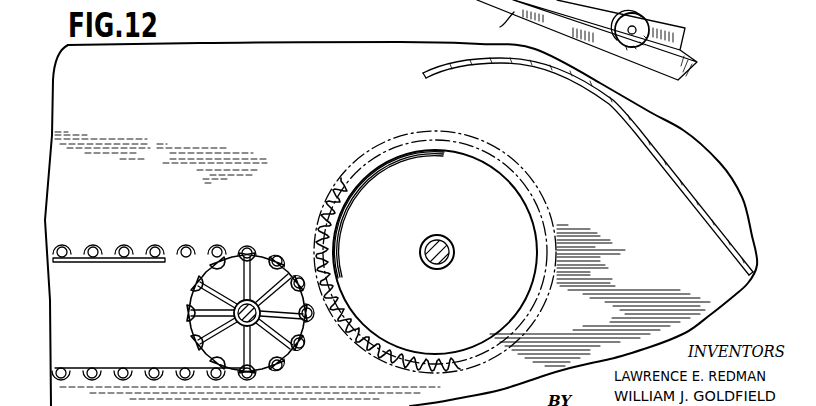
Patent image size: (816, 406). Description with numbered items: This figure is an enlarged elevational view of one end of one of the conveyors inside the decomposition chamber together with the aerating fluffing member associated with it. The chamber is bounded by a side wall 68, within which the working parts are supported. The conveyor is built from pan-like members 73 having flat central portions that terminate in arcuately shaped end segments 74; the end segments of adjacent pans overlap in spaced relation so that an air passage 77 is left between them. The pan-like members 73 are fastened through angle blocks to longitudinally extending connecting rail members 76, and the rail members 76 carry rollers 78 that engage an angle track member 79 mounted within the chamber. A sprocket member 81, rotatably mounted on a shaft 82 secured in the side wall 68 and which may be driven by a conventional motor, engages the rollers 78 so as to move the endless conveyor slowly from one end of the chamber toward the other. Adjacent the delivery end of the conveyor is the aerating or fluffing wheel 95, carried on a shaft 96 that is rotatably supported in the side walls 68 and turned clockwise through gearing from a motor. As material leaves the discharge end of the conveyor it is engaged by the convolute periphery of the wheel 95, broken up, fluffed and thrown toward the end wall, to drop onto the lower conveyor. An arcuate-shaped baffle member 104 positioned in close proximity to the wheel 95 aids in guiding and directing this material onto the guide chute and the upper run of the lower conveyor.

The side wall 68 is at (245, 125).
The pan-like member 73 is at (211, 378).
The arcuately shaped end segment 74 is at (122, 248).
The connecting rail member 76 is at (686, 34).
The air passage 77 is at (154, 247).
The roller 78 is at (466, 0).
The angle track member 79 is at (496, 25).
The sprocket member 81 is at (188, 300).
The shaft 82 is at (243, 326).
The aerating or fluffing wheel 95 is at (352, 215).
The shaft 96 is at (452, 236).
The arcuate-shaped baffle member 104 is at (687, 190).